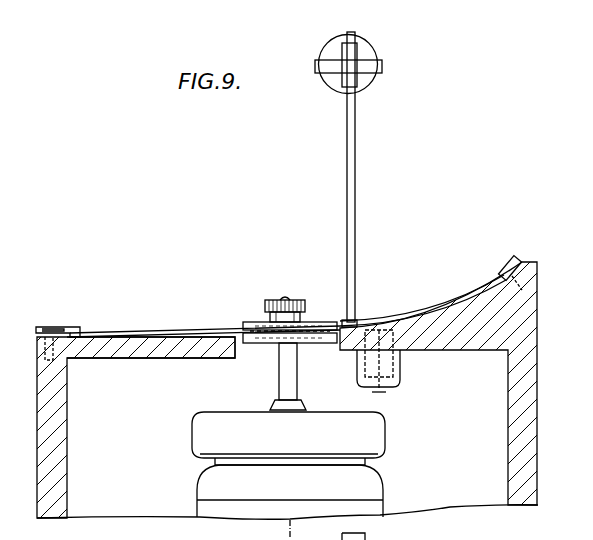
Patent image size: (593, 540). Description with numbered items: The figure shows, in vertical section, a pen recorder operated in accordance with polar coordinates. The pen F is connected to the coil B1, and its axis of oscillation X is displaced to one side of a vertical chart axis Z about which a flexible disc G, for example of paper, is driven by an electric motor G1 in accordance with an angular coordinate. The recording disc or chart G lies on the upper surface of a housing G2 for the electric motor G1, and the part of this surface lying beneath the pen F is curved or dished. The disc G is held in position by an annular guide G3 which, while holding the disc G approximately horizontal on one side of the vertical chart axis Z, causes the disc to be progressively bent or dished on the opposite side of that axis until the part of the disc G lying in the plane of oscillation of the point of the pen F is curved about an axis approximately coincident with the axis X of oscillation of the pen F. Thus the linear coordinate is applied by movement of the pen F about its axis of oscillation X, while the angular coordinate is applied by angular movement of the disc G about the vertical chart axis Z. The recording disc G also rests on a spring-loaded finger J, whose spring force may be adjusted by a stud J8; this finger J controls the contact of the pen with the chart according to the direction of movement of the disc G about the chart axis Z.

The coil B1 is at (325, 52).
The axis of oscillation X is at (349, 67).
The pen F is at (356, 222).
The vertical chart axis Z is at (287, 292).
The flexible disc G is at (142, 333).
The electric motor G1 is at (375, 507).
The housing G2 is at (167, 350).
The annular guide G3 is at (482, 283).
The finger J is at (378, 323).
The stud J8 is at (383, 393).